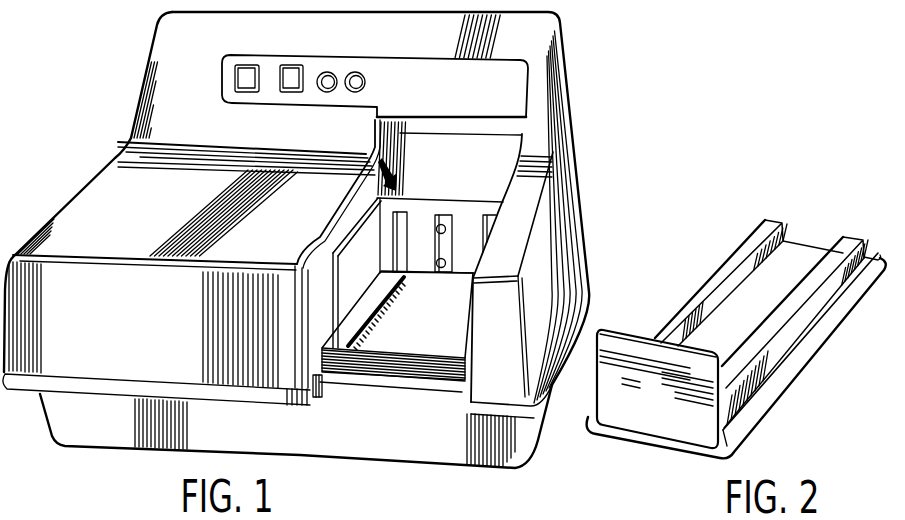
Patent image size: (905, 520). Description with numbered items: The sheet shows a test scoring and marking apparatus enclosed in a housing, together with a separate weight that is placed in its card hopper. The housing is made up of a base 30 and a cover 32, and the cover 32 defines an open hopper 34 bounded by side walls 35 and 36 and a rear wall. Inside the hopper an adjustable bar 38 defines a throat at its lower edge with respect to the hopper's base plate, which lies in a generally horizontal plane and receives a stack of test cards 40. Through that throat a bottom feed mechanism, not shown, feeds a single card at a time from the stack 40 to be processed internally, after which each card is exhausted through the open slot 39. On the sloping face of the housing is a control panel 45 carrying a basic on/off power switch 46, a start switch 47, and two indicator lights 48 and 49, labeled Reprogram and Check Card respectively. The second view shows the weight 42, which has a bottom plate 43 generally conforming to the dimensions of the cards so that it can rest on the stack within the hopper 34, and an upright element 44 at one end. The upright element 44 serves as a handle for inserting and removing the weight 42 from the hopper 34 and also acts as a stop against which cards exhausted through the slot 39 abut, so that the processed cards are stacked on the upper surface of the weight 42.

In FIG. 1, the base 30 is at (58, 421).
In FIG. 1, the cover 32 is at (51, 211).
In FIG. 1, the open hopper 34 is at (374, 150).
In FIG. 1, the side wall 35 is at (478, 263).
In FIG. 1, the side wall 36 is at (355, 238).
In FIG. 1, the adjustable bar 38 is at (440, 218).
In FIG. 1, the open slot 39 is at (436, 124).
In FIG. 1, the stack of test cards 40 is at (424, 324).
In FIG. 2, the weight 42 is at (685, 280).
In FIG. 2, the bottom plate 43 is at (765, 394).
In FIG. 2, the upright element 44 is at (642, 395).
In FIG. 1, the control panel 45 is at (425, 94).
In FIG. 1, the on/off power switch 46 is at (250, 66).
In FIG. 1, the start switch 47 is at (294, 66).
In FIG. 1, the indicator light 48 is at (328, 73).
In FIG. 1, the indicator light 49 is at (356, 73).